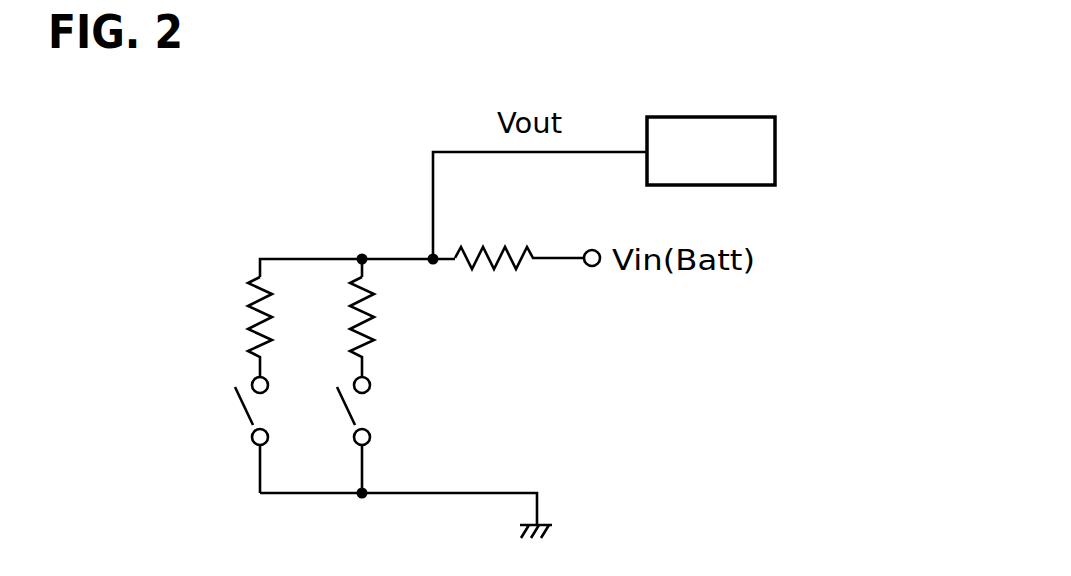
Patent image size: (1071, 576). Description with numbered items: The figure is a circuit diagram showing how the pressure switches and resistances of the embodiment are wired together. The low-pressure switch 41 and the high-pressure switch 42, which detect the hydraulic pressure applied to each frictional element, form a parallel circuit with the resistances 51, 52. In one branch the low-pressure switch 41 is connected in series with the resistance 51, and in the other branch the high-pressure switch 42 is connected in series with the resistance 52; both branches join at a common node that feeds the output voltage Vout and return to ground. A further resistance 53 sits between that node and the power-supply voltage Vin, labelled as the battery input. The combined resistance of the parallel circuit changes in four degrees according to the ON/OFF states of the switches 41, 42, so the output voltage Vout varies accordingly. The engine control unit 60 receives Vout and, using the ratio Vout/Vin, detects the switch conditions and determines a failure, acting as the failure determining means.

The low-pressure switch 41 is at (245, 418).
The high-pressure switch 42 is at (342, 417).
The resistance 51 is at (250, 293).
The resistance 52 is at (353, 300).
The third resistor R3 53 is at (523, 265).
The engine control unit (ECU) 60 is at (702, 112).